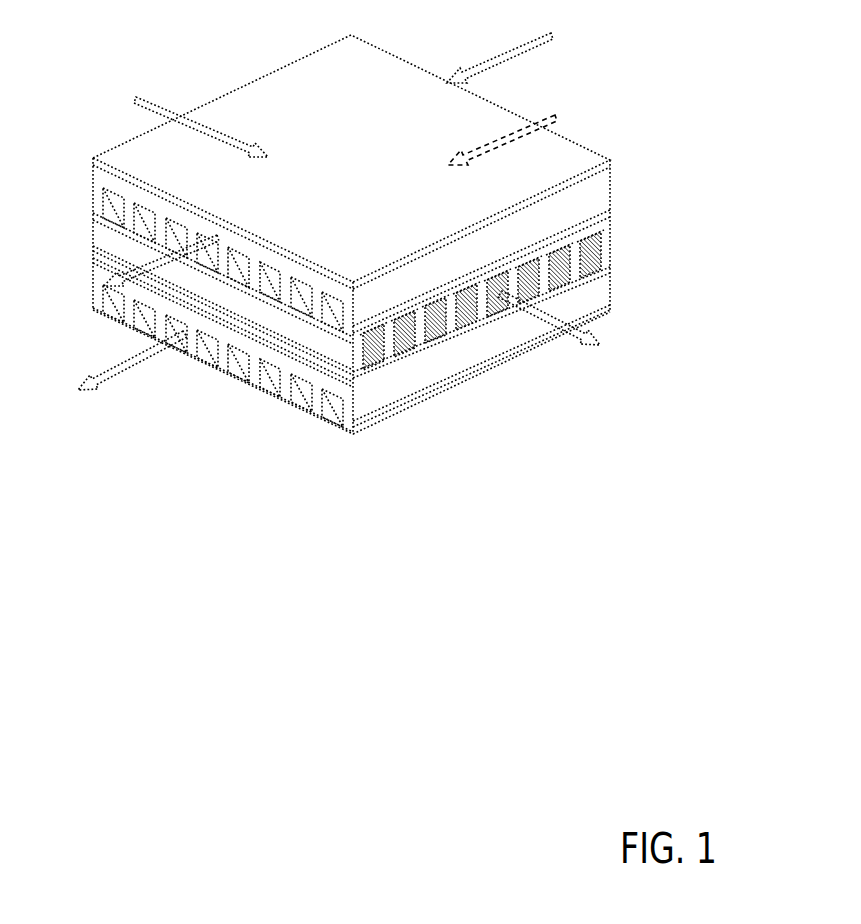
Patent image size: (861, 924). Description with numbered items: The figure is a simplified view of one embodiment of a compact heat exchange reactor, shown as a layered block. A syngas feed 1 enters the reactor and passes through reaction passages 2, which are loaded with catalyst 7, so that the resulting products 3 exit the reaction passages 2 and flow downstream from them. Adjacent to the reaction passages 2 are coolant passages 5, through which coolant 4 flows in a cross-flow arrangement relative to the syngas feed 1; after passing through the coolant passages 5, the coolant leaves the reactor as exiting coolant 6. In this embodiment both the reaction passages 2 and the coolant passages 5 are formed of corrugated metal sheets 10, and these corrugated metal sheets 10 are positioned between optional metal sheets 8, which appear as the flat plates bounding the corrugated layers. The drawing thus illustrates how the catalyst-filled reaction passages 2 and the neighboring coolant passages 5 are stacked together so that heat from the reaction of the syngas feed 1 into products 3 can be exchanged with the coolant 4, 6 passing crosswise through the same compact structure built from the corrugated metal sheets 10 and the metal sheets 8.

The syngas feed 1 is at (160, 99).
The reaction passages 2 is at (448, 300).
The products 3 is at (578, 343).
The coolant 4 is at (555, 118).
The coolant passages 5 is at (95, 192).
The coolant 6 is at (143, 267).
The catalyst 7 is at (407, 325).
The metal sheets 8 is at (517, 357).
The corrugated metal sheets 10 is at (347, 420).